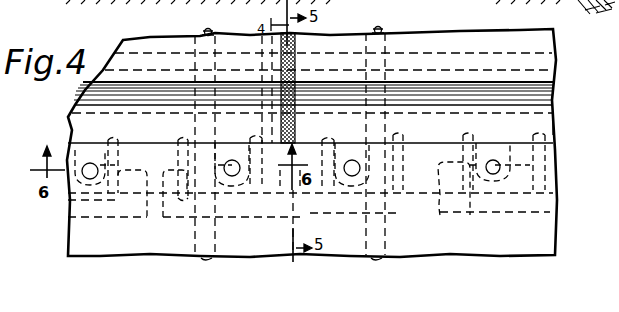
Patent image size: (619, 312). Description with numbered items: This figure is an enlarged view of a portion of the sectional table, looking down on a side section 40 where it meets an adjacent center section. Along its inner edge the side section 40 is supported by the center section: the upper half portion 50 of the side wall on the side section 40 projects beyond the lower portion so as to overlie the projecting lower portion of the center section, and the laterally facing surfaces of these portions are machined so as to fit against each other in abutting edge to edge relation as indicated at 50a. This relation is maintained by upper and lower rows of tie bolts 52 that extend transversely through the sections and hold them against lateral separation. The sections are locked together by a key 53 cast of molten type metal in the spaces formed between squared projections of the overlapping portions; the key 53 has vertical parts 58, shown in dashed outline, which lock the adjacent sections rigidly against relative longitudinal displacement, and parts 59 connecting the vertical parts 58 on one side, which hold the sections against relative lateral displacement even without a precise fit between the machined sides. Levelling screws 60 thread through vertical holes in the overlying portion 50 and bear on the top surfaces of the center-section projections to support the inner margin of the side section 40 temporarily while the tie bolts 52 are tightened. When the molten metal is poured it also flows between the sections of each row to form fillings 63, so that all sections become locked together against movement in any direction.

The side section 40 is at (552, 228).
The upper half portion of side wall 50 is at (553, 157).
The abutting edge to edge relation 50a is at (500, 141).
The tie bolt 52 is at (212, 29).
The key 53 is at (542, 133).
The vertical part of key 58 is at (138, 141).
The connecting part of key 59 is at (100, 198).
The levelling screw 60 is at (92, 167).
The filling 63 is at (300, 91).